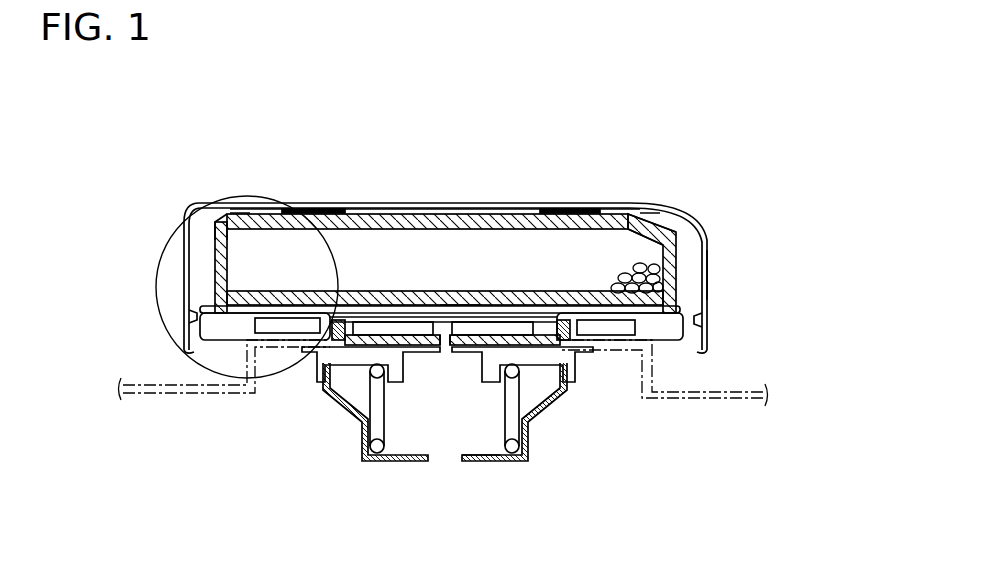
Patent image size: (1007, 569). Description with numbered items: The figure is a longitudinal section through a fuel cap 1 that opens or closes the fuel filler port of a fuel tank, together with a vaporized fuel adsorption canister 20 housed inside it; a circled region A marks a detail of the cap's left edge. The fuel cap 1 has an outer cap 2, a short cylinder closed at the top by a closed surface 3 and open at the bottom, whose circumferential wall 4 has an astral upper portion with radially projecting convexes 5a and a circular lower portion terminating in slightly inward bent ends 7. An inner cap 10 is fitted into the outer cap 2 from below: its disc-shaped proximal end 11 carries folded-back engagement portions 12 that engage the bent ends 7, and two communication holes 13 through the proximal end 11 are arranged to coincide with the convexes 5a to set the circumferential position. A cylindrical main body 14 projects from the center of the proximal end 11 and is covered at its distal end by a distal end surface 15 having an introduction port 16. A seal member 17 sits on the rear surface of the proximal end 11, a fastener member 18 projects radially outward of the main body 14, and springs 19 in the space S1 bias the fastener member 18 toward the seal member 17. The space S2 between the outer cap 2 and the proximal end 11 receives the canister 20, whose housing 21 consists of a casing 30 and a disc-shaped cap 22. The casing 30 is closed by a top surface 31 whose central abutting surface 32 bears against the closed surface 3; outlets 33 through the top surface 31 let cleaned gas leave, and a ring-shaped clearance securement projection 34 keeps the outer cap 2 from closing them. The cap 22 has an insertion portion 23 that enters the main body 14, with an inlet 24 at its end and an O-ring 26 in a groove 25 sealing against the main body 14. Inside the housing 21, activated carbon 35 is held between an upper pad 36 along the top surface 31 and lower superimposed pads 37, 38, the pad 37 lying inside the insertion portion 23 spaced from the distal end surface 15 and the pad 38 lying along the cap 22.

The fuel cap 1 is at (455, 121).
The enlarged portion A is at (185, 221).
The outer cap 2 is at (430, 253).
The closed surface 3 is at (491, 226).
The circumferential wall 4 is at (712, 277).
The convexes 5a is at (184, 286).
The bent ends 7 is at (185, 348).
The inner cap 10 is at (442, 396).
The proximal end 11 is at (245, 345).
The engagement portions 12 is at (165, 386).
The communication holes 13 is at (207, 318).
The main body 14 is at (562, 400).
The distal end surface 15 is at (470, 462).
The introduction port 16 is at (428, 462).
The seal member 17 is at (625, 326).
The fastener member 18 is at (595, 350).
The springs 19 is at (368, 392).
The vaporized fuel adsorption canister 20 is at (212, 264).
The housing 21 is at (213, 242).
The cap 22 is at (284, 298).
The insertion portion 23 is at (418, 348).
The inlet 24 is at (442, 342).
The groove 25 is at (331, 340).
The O-ring 26 is at (565, 345).
The casing 30 is at (682, 262).
The top surface 31 is at (345, 209).
The abutting surface 32 is at (412, 220).
The outlets 33 is at (233, 217).
The clearance securement projection 34 is at (290, 210).
The activated carbon 35 is at (606, 280).
The pad 36 is at (419, 230).
The pad 37 is at (462, 304).
The pad 38 is at (514, 306).
The space S1 is at (484, 430).
The space S2 is at (688, 247).